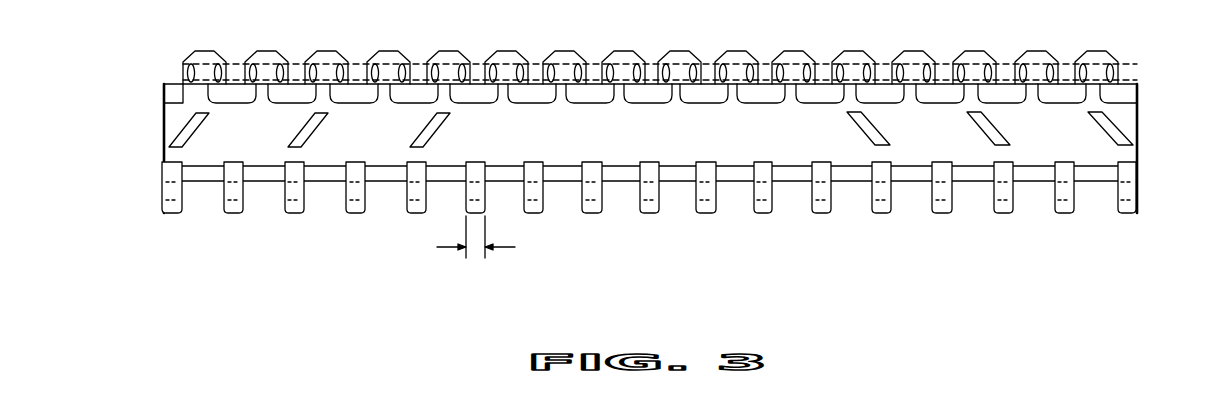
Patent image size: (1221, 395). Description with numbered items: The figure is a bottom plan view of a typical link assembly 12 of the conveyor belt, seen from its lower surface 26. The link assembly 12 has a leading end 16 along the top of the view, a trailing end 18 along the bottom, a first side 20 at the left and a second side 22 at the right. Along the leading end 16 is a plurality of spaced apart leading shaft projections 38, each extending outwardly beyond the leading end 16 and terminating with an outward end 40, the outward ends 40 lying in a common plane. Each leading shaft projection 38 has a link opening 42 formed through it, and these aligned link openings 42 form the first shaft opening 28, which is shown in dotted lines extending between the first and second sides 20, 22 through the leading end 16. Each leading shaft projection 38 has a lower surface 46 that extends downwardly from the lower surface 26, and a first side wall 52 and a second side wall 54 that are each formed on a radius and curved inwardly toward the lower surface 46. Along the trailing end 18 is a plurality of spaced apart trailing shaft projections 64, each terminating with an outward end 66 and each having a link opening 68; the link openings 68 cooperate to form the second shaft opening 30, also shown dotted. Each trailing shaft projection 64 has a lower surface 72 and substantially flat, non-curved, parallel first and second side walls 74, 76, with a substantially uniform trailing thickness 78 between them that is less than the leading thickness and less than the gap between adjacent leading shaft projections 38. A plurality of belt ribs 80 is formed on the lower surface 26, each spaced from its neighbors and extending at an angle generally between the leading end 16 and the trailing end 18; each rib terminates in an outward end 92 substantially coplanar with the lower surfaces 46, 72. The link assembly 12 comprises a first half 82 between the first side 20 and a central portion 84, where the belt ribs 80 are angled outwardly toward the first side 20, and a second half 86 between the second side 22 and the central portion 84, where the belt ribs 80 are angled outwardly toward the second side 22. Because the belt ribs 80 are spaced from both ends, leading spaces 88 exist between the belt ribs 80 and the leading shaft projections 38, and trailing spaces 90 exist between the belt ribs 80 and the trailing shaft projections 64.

The link assembly 12 is at (800, 142).
The leading end 16 is at (705, 50).
The trailing end 18 is at (848, 183).
The first side 20 is at (163, 133).
The second side 22 is at (1137, 133).
The lower surface 26 is at (572, 148).
The first shaft opening 28 is at (190, 100).
The second shaft opening 30 is at (244, 214).
The leading shaft projection 38 is at (388, 52).
The outward end 40 is at (200, 48).
The link opening 42 is at (190, 110).
The lower surface 46 is at (186, 72).
The first side wall 52 is at (186, 64).
The second side wall 54 is at (222, 52).
The trailing shaft projection 64 is at (353, 214).
The outward end 66 is at (238, 214).
The link opening 68 is at (233, 212).
The lower surface 72 is at (414, 214).
The first side wall 74 is at (285, 198).
The second side wall 76 is at (304, 198).
The trailing thickness 78 is at (505, 250).
The belt rib 80 is at (424, 135).
The first half 82 is at (160, 287).
The central portion 84 is at (650, 130).
The second half 86 is at (655, 285).
The leading space 88 is at (460, 107).
The trailing space 90 is at (428, 157).
The outward end 92 is at (448, 113).